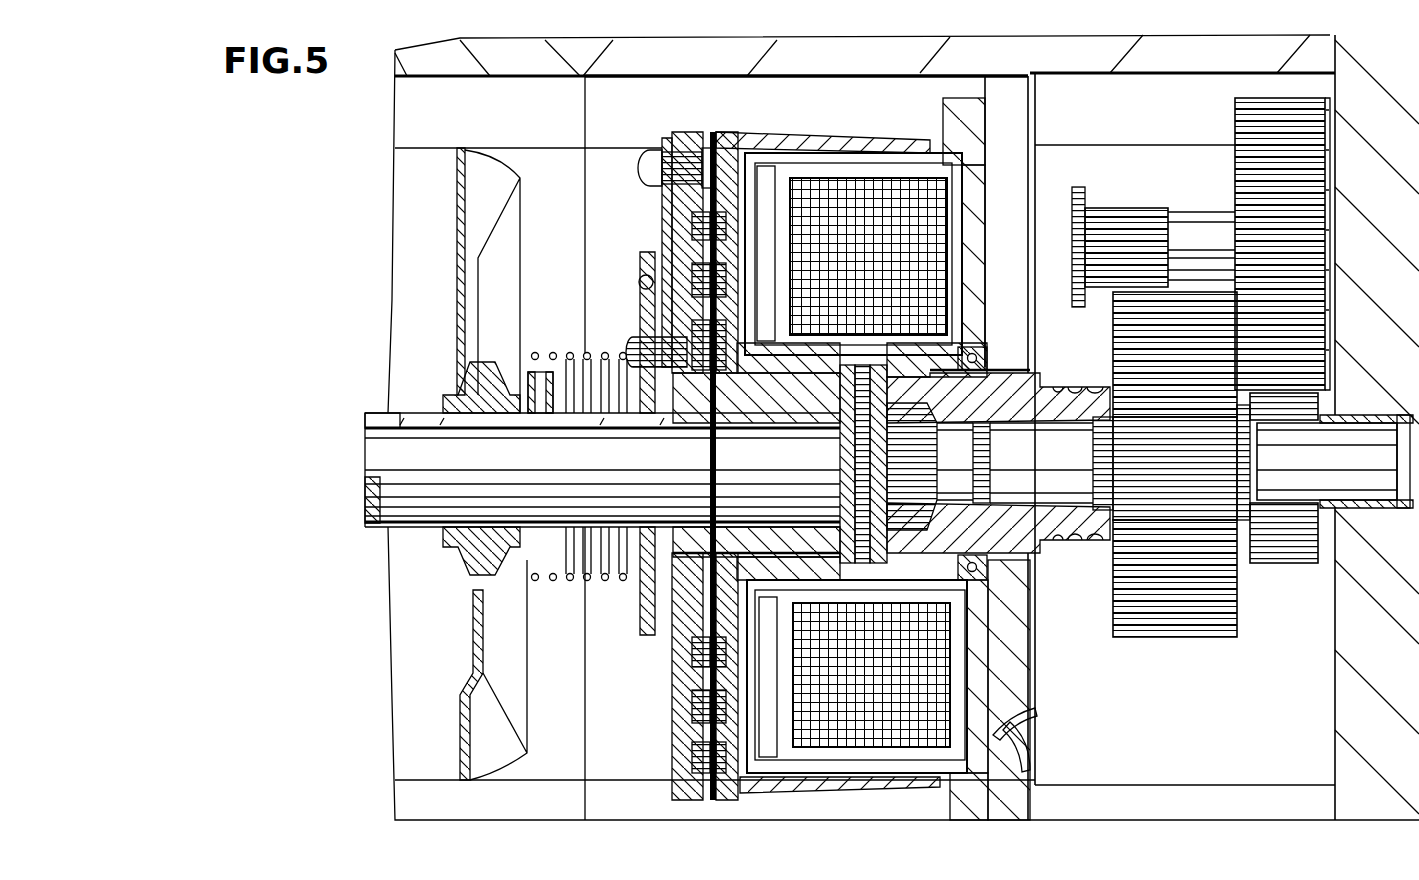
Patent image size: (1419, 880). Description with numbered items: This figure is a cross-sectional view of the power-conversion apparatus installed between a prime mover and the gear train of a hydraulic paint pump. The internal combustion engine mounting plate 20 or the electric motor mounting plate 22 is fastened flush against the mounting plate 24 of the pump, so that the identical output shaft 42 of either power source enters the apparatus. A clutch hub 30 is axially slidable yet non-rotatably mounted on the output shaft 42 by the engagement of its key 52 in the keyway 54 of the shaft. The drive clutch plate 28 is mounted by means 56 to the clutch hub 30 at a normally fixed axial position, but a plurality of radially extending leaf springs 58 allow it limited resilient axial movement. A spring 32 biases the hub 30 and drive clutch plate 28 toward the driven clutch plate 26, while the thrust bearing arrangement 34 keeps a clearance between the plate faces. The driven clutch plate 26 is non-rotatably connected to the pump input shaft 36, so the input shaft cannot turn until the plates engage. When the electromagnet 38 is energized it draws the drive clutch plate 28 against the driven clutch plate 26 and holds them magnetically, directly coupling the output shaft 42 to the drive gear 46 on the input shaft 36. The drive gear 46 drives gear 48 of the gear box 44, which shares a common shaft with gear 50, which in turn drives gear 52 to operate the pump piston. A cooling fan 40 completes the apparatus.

The internal combustion engine mounting plate 20 is at (527, 70).
The electric motor mounting plate 22 is at (903, 427).
The mounting plate of pump 24 is at (722, 76).
The driven clutch plate 26 is at (722, 132).
The drive clutch plate 28 is at (700, 132).
The clutch hub 30 is at (738, 410).
The spring 32 is at (570, 352).
The thrust bearing arrangement 34 is at (898, 556).
The pump input shaft 36 is at (1357, 445).
The electromagnet 38 is at (945, 232).
The cooling fan 40 is at (522, 285).
The output shaft 42 is at (383, 460).
The gear box 44 is at (1178, 120).
The drive gear 46 is at (1155, 410).
The gear 48 is at (1127, 333).
The gear 50 is at (1300, 565).
The gear / key 52 is at (674, 420).
The keyway 54 is at (373, 413).
The mounting means 56 is at (648, 250).
The leaf springs 58 is at (665, 202).